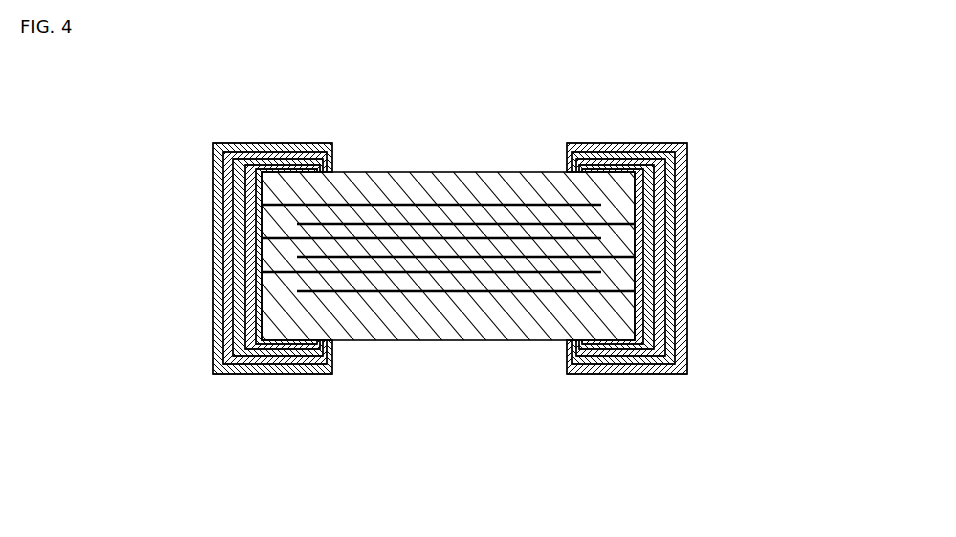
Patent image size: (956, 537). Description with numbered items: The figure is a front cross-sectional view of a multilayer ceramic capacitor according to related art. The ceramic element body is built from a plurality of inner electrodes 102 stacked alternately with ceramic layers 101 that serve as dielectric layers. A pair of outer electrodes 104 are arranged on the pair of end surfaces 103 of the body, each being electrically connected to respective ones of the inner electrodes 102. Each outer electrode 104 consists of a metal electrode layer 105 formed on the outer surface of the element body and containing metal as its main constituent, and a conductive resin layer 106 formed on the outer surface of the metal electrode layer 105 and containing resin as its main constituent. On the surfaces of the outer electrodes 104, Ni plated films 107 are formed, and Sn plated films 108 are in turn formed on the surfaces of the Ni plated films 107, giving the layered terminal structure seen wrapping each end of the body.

The ceramic layers 101 is at (488, 240).
The inner electrodes 102 is at (423, 238).
The end surfaces 103 is at (257, 211).
The outer electrodes 104 is at (278, 169).
The metal electrode layers 105 is at (250, 253).
The conductive resin layers 106 is at (238, 294).
The Ni plated films 107 is at (228, 339).
The Sn plated films 108 is at (216, 372).